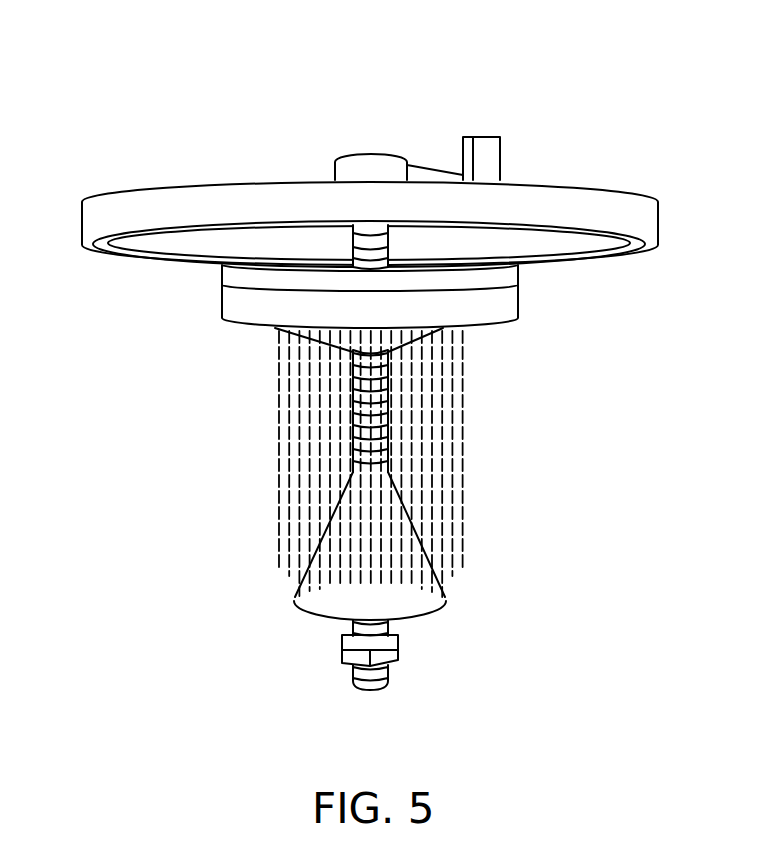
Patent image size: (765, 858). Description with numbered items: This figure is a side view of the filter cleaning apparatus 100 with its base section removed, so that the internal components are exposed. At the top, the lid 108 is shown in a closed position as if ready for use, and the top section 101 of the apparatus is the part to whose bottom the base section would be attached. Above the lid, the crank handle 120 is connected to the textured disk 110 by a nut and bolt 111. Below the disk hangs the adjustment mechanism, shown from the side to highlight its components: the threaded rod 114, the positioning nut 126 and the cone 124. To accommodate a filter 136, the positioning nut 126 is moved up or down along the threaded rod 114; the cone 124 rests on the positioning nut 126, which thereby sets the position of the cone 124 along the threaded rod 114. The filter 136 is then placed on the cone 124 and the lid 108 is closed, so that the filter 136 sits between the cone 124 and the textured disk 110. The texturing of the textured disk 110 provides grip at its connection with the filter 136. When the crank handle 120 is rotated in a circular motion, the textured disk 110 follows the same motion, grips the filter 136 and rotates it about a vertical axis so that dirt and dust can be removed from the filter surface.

The filter cleaning apparatus 100 is at (394, 26).
The lid 108 is at (136, 202).
The top section 101 is at (155, 246).
The nut and bolt 111 is at (367, 240).
The crank handle 120 is at (493, 146).
The textured disk 110 is at (518, 279).
The filter 136 is at (455, 431).
The threaded rod 114 is at (365, 690).
The cone 124 is at (447, 590).
The positioning nut 126 is at (398, 657).